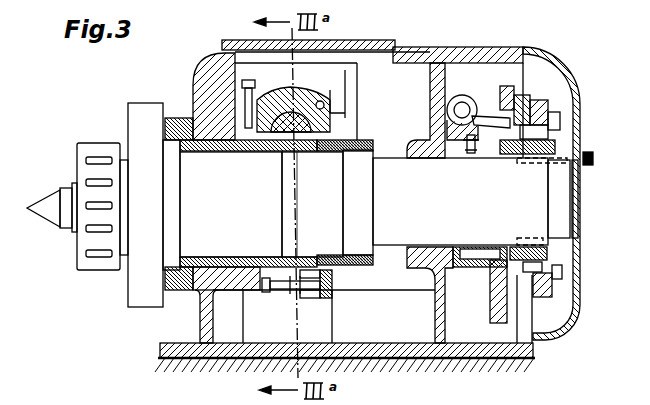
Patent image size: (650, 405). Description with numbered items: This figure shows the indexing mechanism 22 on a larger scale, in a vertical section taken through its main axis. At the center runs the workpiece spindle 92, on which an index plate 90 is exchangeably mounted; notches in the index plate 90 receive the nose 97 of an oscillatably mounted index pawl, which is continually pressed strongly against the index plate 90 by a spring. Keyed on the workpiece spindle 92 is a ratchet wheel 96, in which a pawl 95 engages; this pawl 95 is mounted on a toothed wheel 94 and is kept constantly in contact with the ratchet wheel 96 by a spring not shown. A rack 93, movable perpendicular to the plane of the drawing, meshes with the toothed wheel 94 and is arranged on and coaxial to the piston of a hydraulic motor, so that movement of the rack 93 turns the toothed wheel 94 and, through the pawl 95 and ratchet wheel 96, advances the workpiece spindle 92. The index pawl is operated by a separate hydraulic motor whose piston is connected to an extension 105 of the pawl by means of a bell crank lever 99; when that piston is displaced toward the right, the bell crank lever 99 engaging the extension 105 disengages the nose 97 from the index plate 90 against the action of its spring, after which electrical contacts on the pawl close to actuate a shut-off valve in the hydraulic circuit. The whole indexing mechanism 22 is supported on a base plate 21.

The base plate 21 is at (452, 357).
The indexing mechanism 22 is at (437, 62).
The index plate 90 is at (548, 298).
The workpiece spindle 92 is at (375, 203).
The rack 93 is at (336, 126).
The toothed wheel 94 is at (296, 293).
The pawl 95 is at (329, 301).
The ratchet wheel 96 is at (340, 262).
The nose 97 is at (536, 109).
The bell crank lever 99 is at (496, 124).
The extension 105 is at (519, 93).